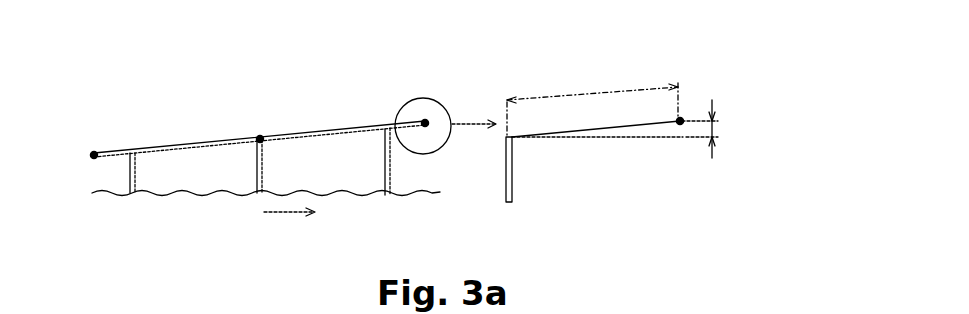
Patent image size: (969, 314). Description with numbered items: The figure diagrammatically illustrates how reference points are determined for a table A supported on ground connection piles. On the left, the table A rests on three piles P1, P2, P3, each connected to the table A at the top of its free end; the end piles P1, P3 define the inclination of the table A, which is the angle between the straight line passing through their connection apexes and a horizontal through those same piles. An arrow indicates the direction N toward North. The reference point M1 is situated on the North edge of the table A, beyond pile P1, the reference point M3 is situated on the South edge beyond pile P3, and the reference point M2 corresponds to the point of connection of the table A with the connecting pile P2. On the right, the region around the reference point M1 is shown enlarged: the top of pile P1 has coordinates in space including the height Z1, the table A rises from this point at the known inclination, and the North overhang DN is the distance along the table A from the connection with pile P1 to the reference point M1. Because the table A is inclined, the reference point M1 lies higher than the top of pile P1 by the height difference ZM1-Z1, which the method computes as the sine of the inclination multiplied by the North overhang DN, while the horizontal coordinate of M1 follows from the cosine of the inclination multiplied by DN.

The table A is at (190, 143).
The reference point M1 is at (426, 120).
The reference point M2 is at (260, 137).
The reference point M3 is at (94, 153).
The end pile P1 is at (385, 174).
The pile P2 is at (257, 172).
The end pile P3 is at (130, 185).
The North direction N is at (298, 212).
The North overhang DN is at (619, 92).
The height difference ZM1-Z1 is at (732, 129).